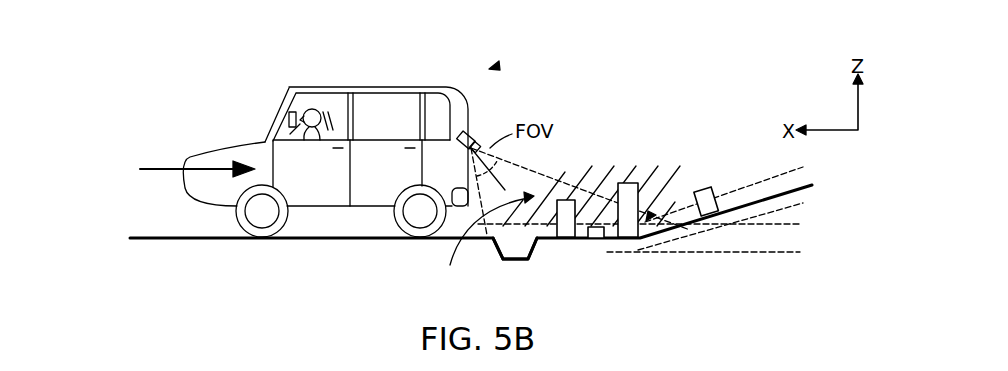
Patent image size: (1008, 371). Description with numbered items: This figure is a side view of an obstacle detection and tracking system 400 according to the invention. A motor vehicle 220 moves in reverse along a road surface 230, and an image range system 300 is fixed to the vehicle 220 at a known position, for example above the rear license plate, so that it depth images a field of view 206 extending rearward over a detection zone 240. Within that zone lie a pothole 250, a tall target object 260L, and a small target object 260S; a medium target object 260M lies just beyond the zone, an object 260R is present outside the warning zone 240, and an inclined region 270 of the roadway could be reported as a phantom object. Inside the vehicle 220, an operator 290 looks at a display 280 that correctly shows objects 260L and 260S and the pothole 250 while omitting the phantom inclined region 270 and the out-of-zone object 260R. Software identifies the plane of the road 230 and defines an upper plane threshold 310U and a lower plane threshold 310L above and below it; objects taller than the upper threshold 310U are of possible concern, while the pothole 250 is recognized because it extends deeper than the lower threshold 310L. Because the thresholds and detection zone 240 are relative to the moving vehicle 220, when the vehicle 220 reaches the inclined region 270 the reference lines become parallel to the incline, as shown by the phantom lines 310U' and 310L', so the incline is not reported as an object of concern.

The field of view region 206 is at (505, 168).
The motor vehicle 220 is at (217, 138).
The surface 230 is at (163, 230).
The detection zone 240 is at (485, 244).
The pothole 250 is at (518, 252).
The tall target object 260L is at (567, 210).
The object 260R is at (627, 183).
The medium target object 260M is at (703, 191).
The small target object 260S is at (597, 238).
The inclined region 270 is at (650, 213).
The display 280 is at (288, 117).
The operator 290 is at (312, 107).
The system 300 is at (478, 135).
The upper plane threshold 310U is at (667, 226).
The lower plane threshold 310L is at (730, 253).
The upper reference line parallel to incline 310U' is at (753, 188).
The lower reference line parallel to incline 310L' is at (756, 219).
The system 400 is at (497, 66).